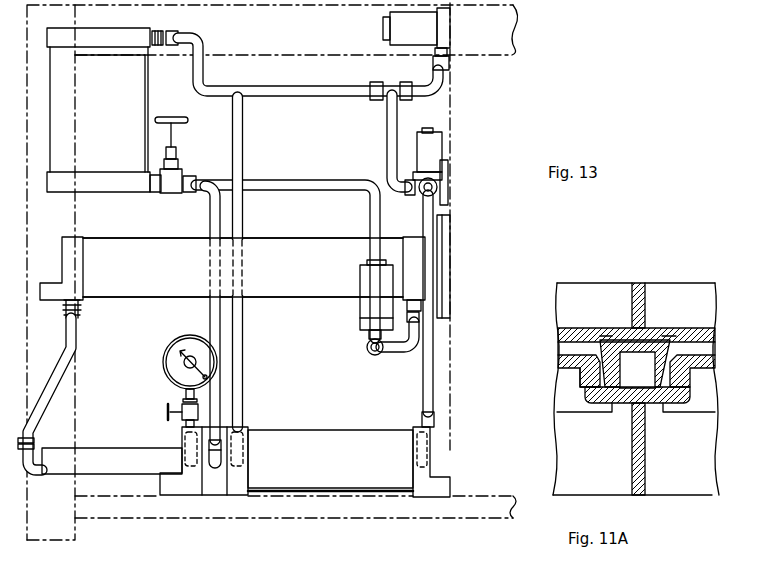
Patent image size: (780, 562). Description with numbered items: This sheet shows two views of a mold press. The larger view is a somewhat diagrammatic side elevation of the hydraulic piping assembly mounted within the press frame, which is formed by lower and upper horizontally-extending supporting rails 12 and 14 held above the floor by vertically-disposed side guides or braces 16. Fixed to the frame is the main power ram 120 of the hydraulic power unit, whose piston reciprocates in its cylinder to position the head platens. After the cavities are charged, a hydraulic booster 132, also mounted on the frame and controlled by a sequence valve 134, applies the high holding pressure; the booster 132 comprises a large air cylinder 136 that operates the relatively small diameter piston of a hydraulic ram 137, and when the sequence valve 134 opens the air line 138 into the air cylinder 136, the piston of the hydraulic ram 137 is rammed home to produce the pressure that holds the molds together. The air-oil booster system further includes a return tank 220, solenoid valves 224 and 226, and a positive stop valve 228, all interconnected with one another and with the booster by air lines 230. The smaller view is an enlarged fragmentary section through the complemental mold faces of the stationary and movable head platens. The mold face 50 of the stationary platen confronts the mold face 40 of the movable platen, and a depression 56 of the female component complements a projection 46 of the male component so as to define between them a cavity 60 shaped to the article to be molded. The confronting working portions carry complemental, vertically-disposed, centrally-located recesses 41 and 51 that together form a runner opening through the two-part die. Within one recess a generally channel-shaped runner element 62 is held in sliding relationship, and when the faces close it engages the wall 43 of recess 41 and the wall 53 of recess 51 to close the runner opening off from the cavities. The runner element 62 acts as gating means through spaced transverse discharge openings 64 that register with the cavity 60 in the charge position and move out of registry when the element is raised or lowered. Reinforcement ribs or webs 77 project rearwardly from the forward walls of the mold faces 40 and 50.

In FIG. 13, the lower supporting rail 12 is at (118, 500).
In FIG. 13, the upper supporting rail 14 is at (522, 23).
In FIG. 13, the side guide or brace 16 is at (40, 548).
In FIG. 13, the main power ram 120 is at (154, 276).
In FIG. 13, the hydraulic booster 132 is at (210, 498).
In FIG. 13, the sequence valve 134 is at (174, 169).
In FIG. 13, the air cylinder 136 is at (313, 430).
In FIG. 13, the hydraulic ram 137 is at (114, 452).
In FIG. 13, the air line 138 is at (58, 386).
In FIG. 13, the return tank 220 is at (117, 114).
In FIG. 13, the solenoid valve 224 is at (440, 137).
In FIG. 13, the solenoid valve 226 is at (382, 26).
In FIG. 13, the positive stop valve 228 is at (359, 317).
In FIG. 13, the air line 230 is at (385, 119).
In FIG. 11A, the mold face 40 is at (705, 385).
In FIG. 11A, the recess 41 is at (598, 388).
In FIG. 11A, the wall 43 is at (636, 392).
In FIG. 11A, the projection 46 is at (560, 368).
In FIG. 11A, the mold face 50 is at (708, 322).
In FIG. 11A, the recess 51 is at (600, 338).
In FIG. 11A, the wall 53 is at (675, 328).
In FIG. 11A, the depression 56 is at (560, 332).
In FIG. 11A, the cavity 60 is at (568, 350).
In FIG. 11A, the runner element 62 is at (617, 340).
In FIG. 11A, the discharge opening 64 is at (660, 363).
In FIG. 11A, the reinforcement rib 77 is at (636, 290).